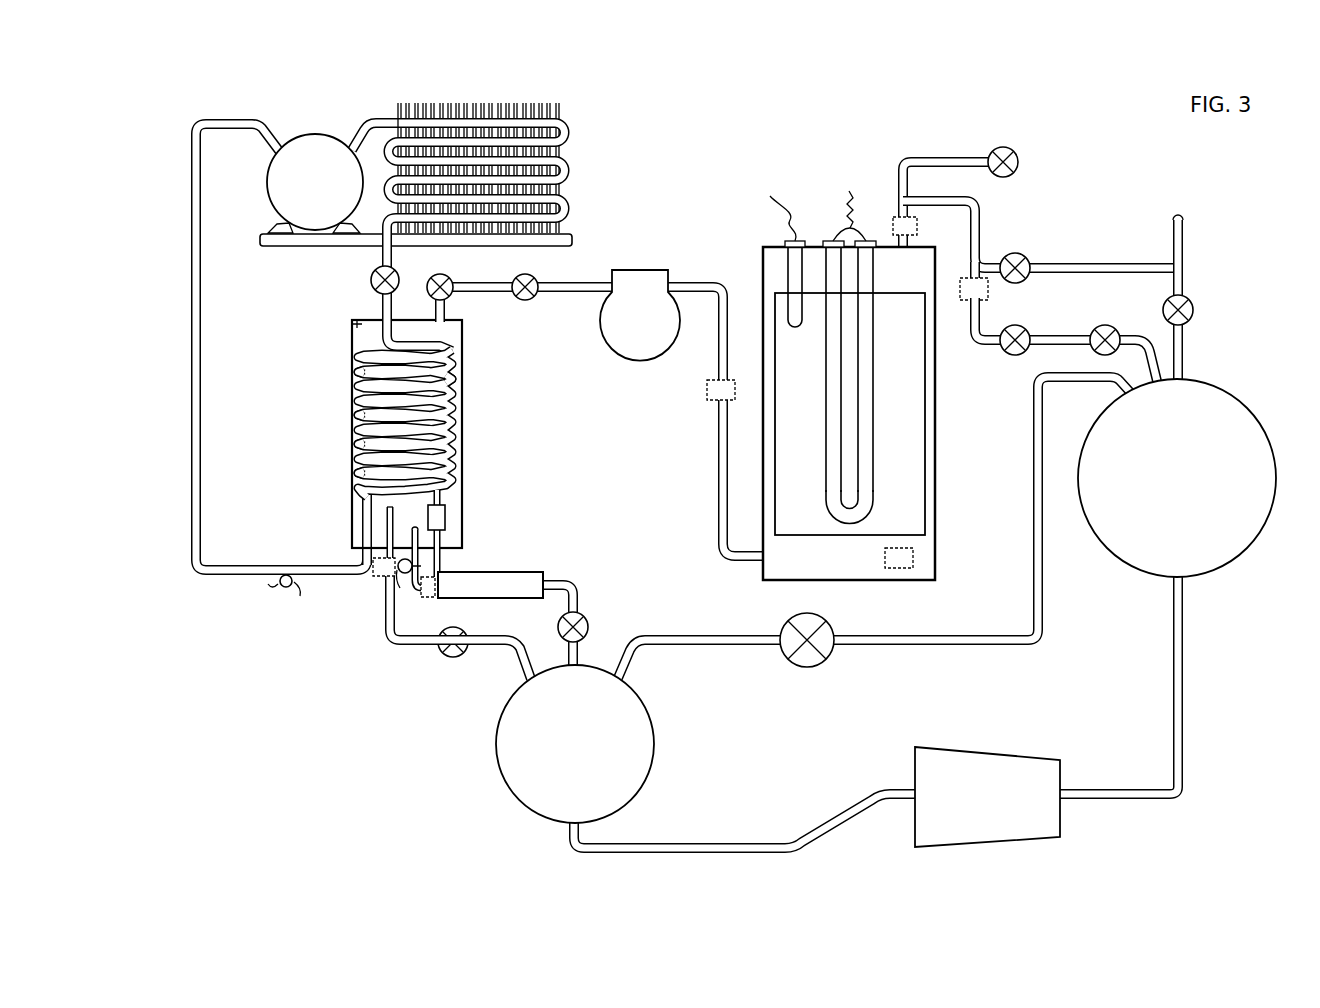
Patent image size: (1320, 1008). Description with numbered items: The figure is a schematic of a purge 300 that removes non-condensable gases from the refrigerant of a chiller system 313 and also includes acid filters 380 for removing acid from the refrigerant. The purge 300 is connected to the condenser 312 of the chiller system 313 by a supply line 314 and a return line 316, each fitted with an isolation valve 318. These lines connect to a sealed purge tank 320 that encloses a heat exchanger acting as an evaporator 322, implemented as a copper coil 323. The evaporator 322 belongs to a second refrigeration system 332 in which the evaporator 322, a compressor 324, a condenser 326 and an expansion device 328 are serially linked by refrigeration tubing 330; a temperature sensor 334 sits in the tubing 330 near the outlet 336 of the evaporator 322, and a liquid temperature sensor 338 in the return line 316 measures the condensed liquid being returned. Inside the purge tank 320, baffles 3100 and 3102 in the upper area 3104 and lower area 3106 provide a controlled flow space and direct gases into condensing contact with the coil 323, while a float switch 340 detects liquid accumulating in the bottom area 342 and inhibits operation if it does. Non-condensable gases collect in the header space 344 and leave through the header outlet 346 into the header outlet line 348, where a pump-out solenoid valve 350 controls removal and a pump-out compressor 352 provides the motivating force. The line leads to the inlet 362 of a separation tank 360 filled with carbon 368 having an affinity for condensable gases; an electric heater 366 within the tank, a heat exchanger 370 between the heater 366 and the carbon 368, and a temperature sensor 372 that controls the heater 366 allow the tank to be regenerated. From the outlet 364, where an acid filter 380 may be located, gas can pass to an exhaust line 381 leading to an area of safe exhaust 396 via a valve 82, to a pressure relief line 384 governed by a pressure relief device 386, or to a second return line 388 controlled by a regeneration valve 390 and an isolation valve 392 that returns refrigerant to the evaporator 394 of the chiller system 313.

The purge 300 is at (168, 101).
The refrigeration tubing 330 is at (191, 222).
The second refrigeration system 332 is at (328, 128).
The compressor 324 is at (296, 194).
The condenser 326 is at (512, 105).
The expansion device 328 is at (371, 283).
The header outlet 346 is at (441, 325).
The header space 344 is at (365, 334).
The baffle 3100 is at (452, 374).
The upper area 3104 is at (358, 368).
The copper coil 323 is at (355, 411).
The lower area 3106 is at (358, 438).
The baffle 3102 is at (358, 472).
The purge tank 320 is at (464, 432).
The evaporator 322 is at (452, 459).
The float switch 340 is at (445, 513).
The bottom area 342 is at (352, 508).
The outlet 336 is at (352, 548).
The temperature sensor 334 is at (279, 586).
The liquid temperature sensor 338 is at (397, 585).
The return line 316 is at (556, 575).
The acid filter 380 is at (893, 217).
The supply line 314 is at (393, 642).
The isolation valves 318 is at (588, 625).
The condenser 312 is at (543, 752).
The chiller system 313 is at (1052, 692).
The pump-out solenoid valve 350 is at (456, 263).
The header outlet line 348 is at (492, 281).
The pump-out compressor 352 is at (621, 337).
The inlet 362 is at (763, 565).
The separation tank 360 is at (935, 440).
The outlet 364 is at (872, 240).
The electric heater 366 is at (873, 492).
The temperature sensor 372 is at (790, 240).
The heat exchanger 370 is at (928, 226).
The pressure relief line 384 is at (940, 158).
The pressure relief device 386 is at (1020, 157).
The exhaust line 381 is at (987, 262).
The valve 82 is at (1016, 254).
The area of safe exhaust 396 is at (1175, 236).
The second return line 388 is at (988, 288).
The regeneration valve 390 is at (1028, 330).
The isolation valve 392 is at (1108, 326).
The evaporator 394 is at (1146, 461).
The carbon 368 is at (850, 552).